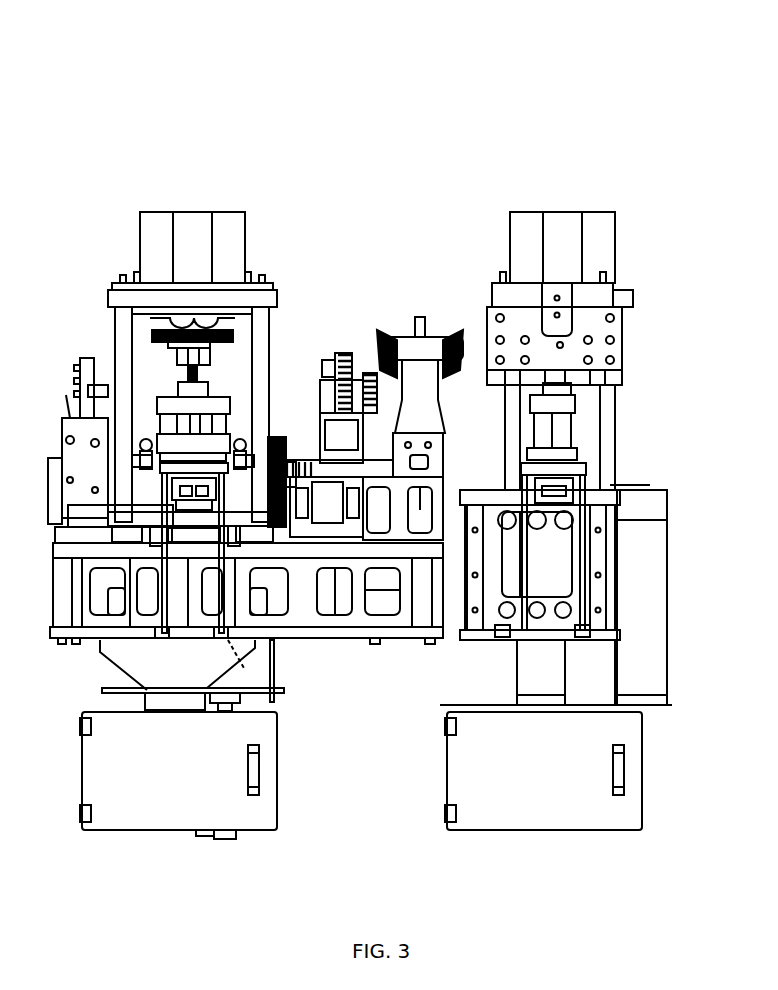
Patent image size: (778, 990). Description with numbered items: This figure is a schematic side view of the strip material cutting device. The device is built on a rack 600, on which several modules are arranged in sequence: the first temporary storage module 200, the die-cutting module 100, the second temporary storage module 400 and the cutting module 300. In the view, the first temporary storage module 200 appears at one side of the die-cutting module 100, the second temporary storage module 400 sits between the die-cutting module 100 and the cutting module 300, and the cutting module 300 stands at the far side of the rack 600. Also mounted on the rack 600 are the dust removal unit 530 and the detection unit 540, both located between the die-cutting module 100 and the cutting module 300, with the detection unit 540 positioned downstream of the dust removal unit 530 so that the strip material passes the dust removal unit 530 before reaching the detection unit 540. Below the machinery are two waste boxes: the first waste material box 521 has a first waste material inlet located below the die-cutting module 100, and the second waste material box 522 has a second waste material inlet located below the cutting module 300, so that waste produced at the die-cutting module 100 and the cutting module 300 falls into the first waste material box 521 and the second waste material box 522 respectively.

The die-cutting module 100 is at (179, 300).
The first temporary storage module 200 is at (83, 458).
The cutting module 300 is at (560, 357).
The second temporary storage module 400 is at (282, 437).
The dust removal unit 530 is at (347, 430).
The detection unit 540 is at (418, 380).
The rack 600 is at (313, 593).
The first waste material box 521 is at (128, 781).
The second waste material box 522 is at (600, 768).